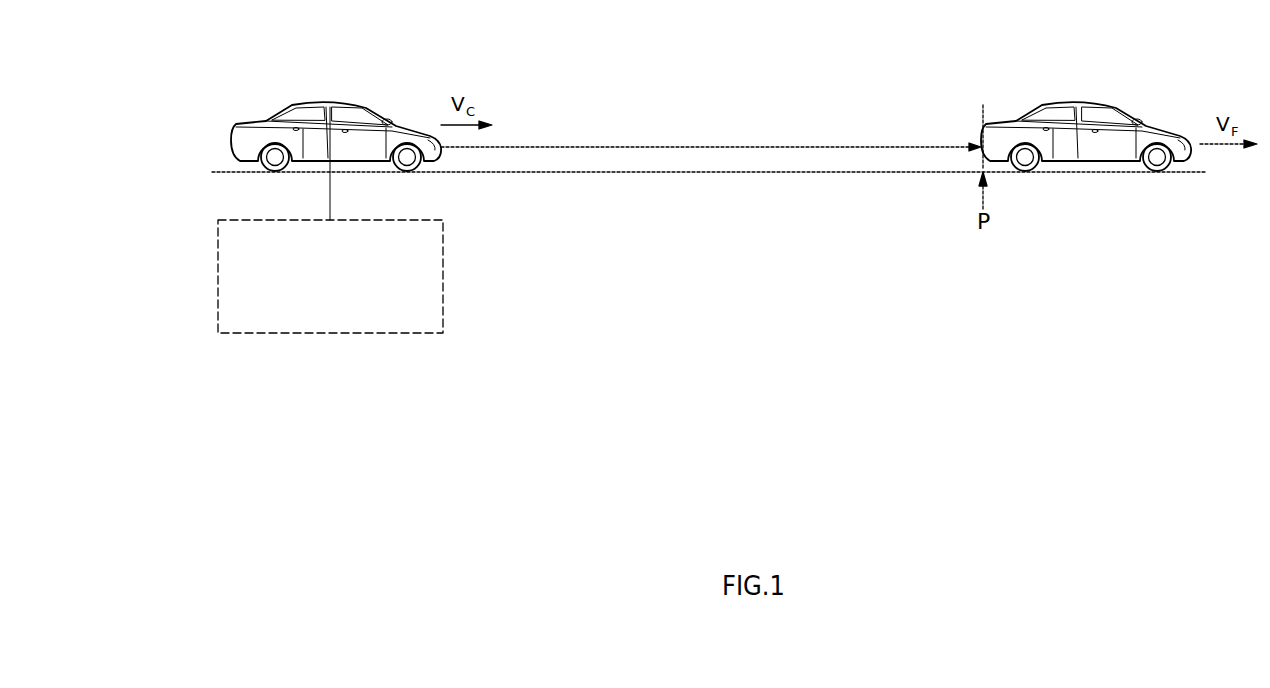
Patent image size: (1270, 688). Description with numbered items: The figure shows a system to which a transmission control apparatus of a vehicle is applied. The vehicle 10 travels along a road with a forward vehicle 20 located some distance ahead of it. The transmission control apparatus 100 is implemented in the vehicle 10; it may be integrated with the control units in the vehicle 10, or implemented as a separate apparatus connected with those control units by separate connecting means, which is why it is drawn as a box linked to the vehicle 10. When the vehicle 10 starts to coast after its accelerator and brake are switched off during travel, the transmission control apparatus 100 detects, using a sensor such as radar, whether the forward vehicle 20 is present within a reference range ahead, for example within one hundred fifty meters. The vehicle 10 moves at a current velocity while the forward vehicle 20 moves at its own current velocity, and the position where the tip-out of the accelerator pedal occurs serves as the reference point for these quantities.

The vehicle 10 is at (323, 103).
The forward vehicle 20 is at (1073, 102).
The transmission control apparatus 100 is at (444, 271).